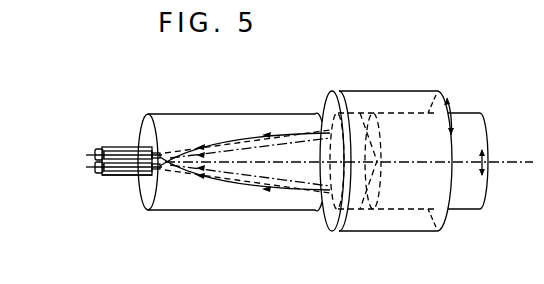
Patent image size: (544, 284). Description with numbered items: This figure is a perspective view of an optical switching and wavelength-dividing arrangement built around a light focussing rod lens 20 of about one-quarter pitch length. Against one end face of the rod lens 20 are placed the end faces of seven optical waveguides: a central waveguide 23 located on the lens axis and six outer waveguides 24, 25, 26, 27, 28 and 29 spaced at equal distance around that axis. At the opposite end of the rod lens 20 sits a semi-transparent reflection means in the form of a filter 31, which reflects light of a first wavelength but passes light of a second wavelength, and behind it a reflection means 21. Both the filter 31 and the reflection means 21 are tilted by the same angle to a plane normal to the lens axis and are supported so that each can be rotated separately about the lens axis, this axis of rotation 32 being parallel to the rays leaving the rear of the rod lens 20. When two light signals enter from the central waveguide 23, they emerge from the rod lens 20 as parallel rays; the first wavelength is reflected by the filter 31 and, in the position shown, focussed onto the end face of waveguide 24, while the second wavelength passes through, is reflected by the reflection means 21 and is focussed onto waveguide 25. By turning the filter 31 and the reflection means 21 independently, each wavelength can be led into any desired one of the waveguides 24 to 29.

The light focussing rod lens 20 is at (236, 122).
The reflection means 21 is at (372, 158).
The central optical waveguide 23 is at (95, 161).
The optical waveguide 24 is at (110, 148).
The optical waveguide 25 is at (108, 176).
The optical waveguide 26 is at (96, 151).
The optical waveguide 27 is at (96, 171).
The optical waveguide 28 is at (127, 172).
The optical waveguide 29 is at (128, 152).
The filter 31 is at (352, 100).
The axis of rotation 32 is at (468, 166).